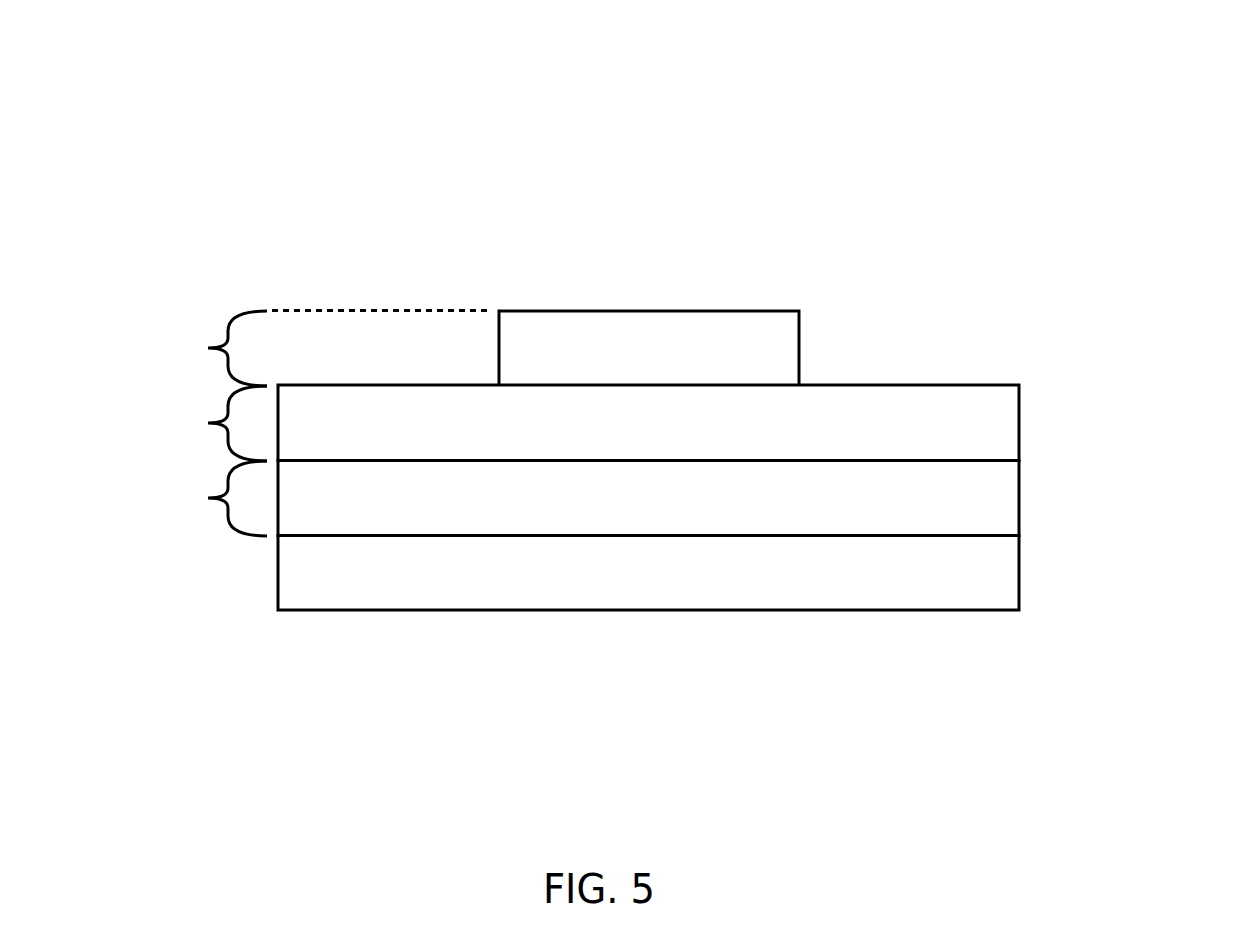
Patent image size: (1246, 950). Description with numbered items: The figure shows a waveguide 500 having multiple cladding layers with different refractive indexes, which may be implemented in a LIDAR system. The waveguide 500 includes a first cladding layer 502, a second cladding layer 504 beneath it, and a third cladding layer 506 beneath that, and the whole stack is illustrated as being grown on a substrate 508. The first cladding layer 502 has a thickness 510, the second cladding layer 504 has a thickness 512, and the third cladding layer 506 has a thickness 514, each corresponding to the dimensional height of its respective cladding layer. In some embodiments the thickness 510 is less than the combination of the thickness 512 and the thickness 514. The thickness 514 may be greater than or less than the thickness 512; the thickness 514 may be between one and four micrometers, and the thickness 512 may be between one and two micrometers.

The waveguide 500 is at (1137, 67).
The first cladding layer 502 is at (715, 376).
The second cladding layer 504 is at (838, 436).
The third cladding layer 506 is at (824, 511).
The substrate 508 is at (748, 586).
The thickness of the first cladding layer 510 is at (273, 349).
The thickness of the second cladding layer 512 is at (161, 423).
The thickness of the third cladding layer 514 is at (160, 498).